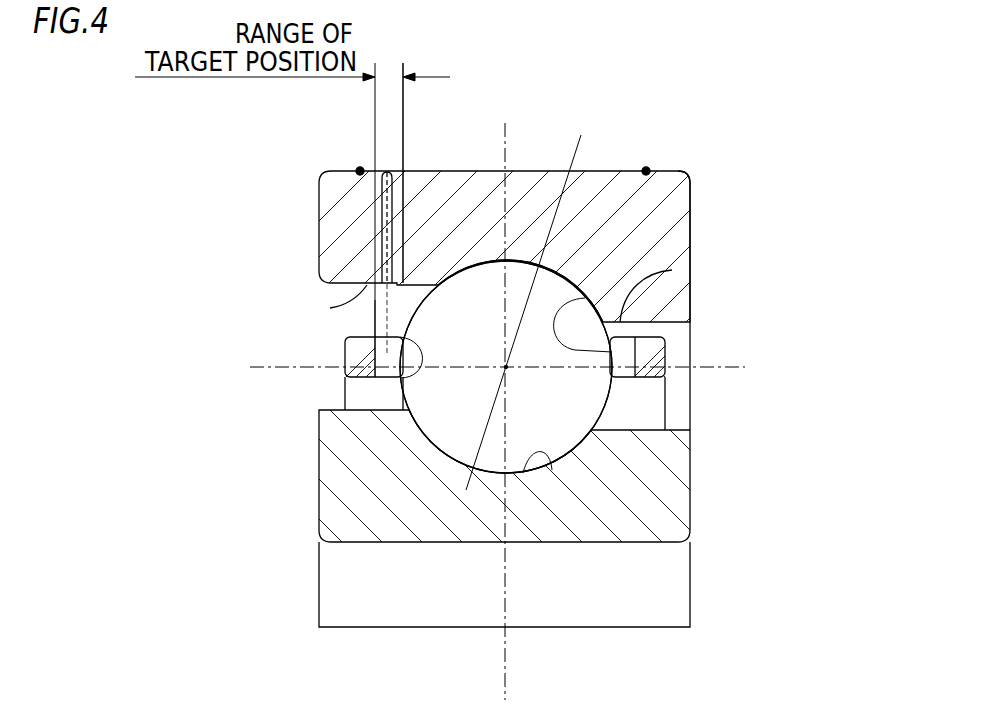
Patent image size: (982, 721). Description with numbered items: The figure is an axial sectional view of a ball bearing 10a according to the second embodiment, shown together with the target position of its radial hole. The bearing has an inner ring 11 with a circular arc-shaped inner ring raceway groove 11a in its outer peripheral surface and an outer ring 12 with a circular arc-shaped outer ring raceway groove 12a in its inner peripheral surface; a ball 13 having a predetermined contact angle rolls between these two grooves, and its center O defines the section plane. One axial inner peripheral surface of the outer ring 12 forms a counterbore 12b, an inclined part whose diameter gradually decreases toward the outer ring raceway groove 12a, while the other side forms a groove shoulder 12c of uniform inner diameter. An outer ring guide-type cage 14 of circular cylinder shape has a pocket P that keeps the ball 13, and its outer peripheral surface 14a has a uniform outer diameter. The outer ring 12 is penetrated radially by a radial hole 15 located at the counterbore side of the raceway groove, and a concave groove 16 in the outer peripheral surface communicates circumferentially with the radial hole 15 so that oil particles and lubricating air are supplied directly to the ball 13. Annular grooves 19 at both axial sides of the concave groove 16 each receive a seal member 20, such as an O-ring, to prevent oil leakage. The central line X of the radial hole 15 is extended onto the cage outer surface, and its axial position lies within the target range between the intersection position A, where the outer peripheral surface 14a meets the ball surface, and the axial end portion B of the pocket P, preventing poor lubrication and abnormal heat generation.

The ball bearing 10a is at (681, 159).
The inner ring 11 is at (367, 467).
The inner ring raceway groove 11a is at (552, 470).
The outer ring 12 is at (380, 203).
The outer ring raceway groove 12a is at (667, 338).
The counterbore 12b is at (330, 308).
The groove shoulder 12c is at (655, 307).
The ball 13 is at (425, 395).
The cage 14 is at (345, 345).
The outer peripheral surface of the cage 14a is at (672, 273).
The radial hole 15 is at (418, 172).
The concave groove 16 is at (383, 172).
The annular groove 19 is at (358, 169).
The seal member 20 is at (645, 169).
The intersection position A is at (420, 391).
The axial end portion of the pocket B is at (383, 328).
The center of the ball O is at (503, 365).
The pocket P is at (667, 386).
The central line of the radial hole X is at (380, 214).